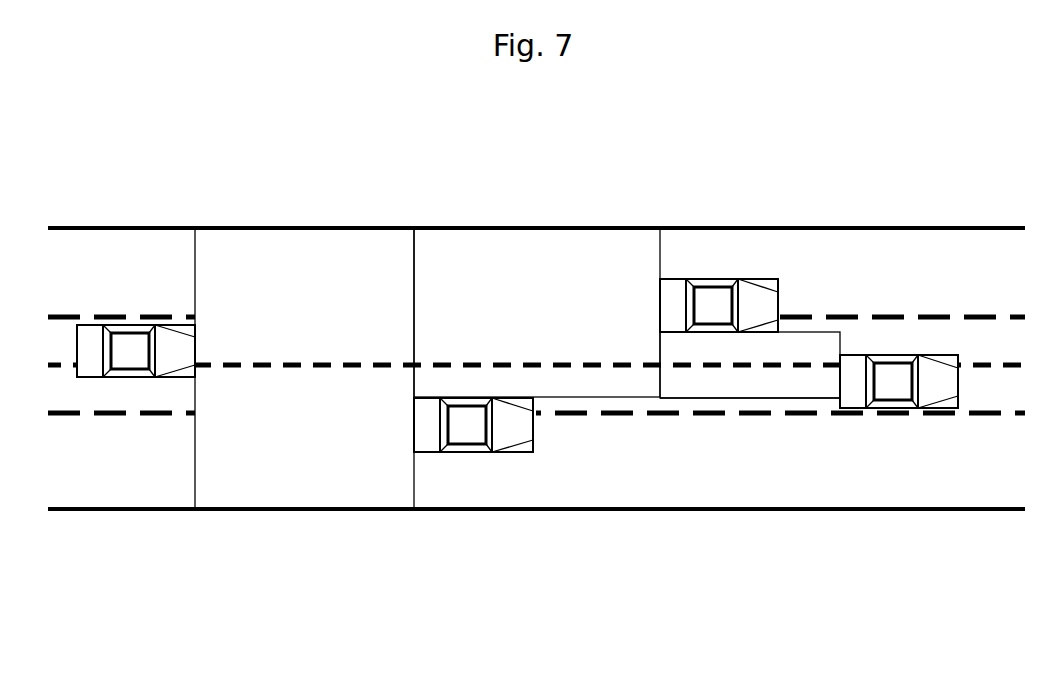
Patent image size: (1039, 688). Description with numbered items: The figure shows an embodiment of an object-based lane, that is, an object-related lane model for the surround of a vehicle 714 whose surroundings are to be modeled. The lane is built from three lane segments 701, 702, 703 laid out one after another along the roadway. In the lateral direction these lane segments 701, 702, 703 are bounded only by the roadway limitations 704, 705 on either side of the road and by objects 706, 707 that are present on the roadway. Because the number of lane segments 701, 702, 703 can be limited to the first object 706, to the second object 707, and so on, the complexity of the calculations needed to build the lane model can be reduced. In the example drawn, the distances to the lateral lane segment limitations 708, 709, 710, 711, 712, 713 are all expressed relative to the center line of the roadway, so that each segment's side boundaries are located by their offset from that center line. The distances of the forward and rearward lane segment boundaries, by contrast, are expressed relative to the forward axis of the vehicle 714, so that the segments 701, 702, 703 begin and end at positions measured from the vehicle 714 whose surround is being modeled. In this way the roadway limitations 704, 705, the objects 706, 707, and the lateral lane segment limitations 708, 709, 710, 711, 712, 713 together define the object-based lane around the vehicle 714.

The lane segment 701 is at (240, 280).
The lane segment 702 is at (463, 367).
The lane segment 703 is at (687, 352).
The roadway limitation 704 is at (112, 228).
The roadway limitation 705 is at (77, 509).
The first object 706 is at (463, 425).
The second object 707 is at (710, 310).
The lateral lane segment limitation 708 is at (303, 228).
The lateral lane segment limitation 709 is at (303, 509).
The lateral lane segment limitation 710 is at (540, 228).
The lateral lane segment limitation 711 is at (553, 398).
The lateral lane segment limitation 712 is at (747, 333).
The lateral lane segment limitation 713 is at (750, 398).
The vehicle 714 is at (131, 356).